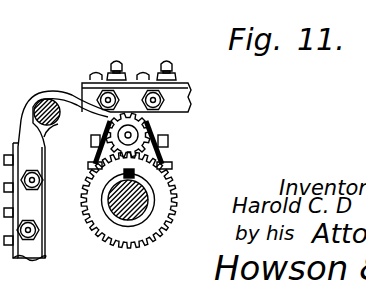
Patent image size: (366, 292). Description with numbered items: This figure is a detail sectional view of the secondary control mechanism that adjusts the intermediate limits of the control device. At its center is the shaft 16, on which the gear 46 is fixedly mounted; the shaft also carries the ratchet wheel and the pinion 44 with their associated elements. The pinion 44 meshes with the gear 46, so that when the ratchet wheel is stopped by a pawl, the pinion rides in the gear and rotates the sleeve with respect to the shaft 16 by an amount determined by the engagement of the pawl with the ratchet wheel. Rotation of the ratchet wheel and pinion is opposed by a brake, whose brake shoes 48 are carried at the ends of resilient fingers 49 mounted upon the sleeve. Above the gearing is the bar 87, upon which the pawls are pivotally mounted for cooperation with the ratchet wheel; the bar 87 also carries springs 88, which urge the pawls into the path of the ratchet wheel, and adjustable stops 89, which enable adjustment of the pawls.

The shaft 16 is at (135, 217).
The pinion 44 is at (140, 133).
The gear 46 is at (179, 200).
The brake shoes 48 is at (100, 122).
The resilient fingers 49 is at (161, 168).
The bar 87 is at (47, 94).
The springs 88 is at (88, 77).
The adjustable stops 89 is at (172, 66).